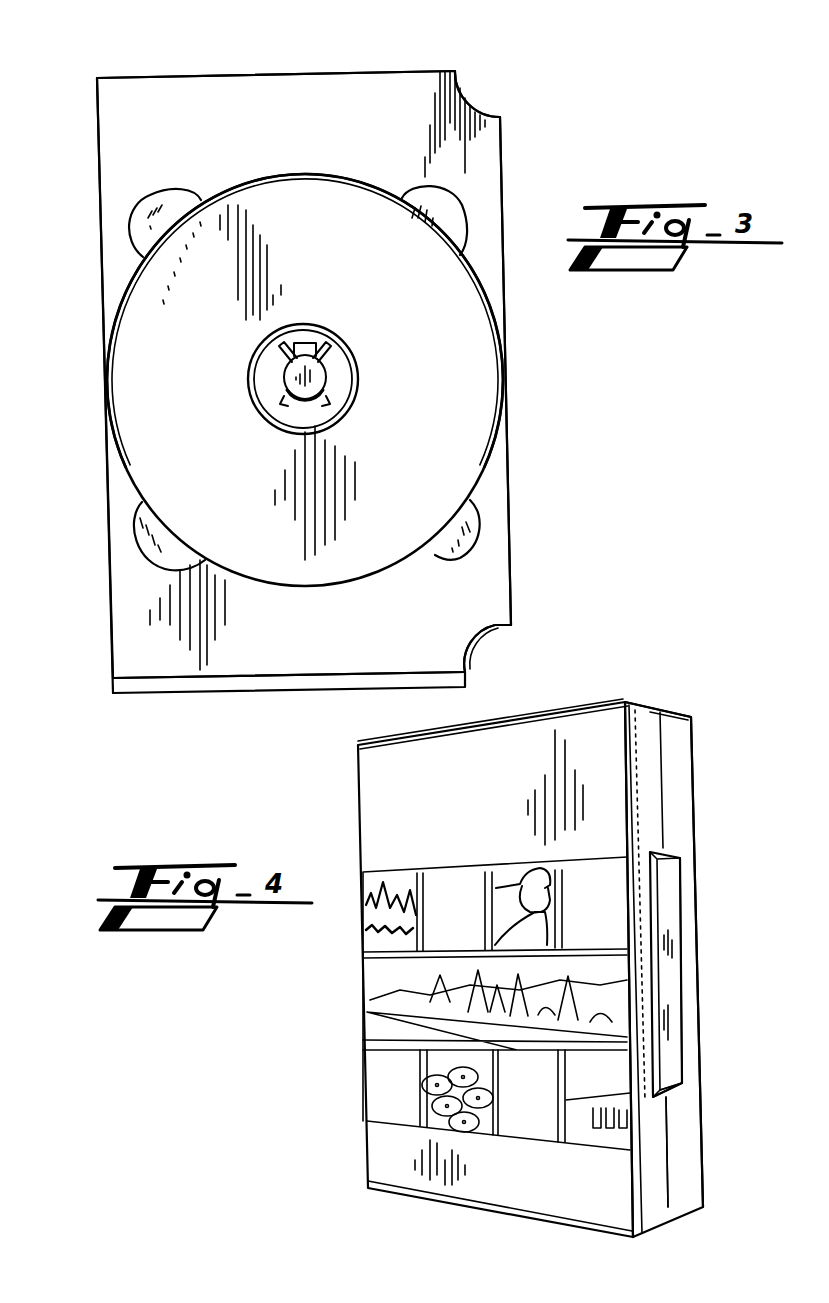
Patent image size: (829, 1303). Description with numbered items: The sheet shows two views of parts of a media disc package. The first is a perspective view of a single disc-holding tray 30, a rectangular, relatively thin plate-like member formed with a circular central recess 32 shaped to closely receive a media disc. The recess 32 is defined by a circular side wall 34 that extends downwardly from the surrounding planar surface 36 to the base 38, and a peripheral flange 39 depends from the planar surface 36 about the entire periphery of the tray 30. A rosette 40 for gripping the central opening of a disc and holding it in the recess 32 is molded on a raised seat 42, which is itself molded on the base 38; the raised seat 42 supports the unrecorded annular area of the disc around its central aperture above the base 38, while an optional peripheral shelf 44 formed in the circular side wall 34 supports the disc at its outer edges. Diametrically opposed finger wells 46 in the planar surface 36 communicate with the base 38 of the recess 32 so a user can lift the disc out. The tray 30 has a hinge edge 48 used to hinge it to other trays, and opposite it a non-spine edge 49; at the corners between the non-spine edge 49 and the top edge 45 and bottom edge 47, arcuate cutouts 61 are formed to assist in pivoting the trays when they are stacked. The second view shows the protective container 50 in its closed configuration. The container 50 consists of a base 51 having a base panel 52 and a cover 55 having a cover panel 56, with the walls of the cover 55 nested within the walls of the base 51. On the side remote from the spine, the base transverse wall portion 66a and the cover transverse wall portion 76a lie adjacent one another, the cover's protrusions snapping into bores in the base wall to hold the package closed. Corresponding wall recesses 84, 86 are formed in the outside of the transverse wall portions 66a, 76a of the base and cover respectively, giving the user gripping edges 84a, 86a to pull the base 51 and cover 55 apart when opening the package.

In FIG. 3, the tray 30 is at (530, 165).
In FIG. 3, the circular central recess 32 is at (485, 361).
In FIG. 3, the circular side wall 34 is at (278, 172).
In FIG. 3, the planar surface 36 is at (330, 647).
In FIG. 3, the base 38 is at (420, 494).
In FIG. 3, the peripheral flange 39 is at (107, 643).
In FIG. 3, the rosette 40 is at (317, 375).
In FIG. 3, the raised seat 42 is at (285, 412).
In FIG. 3, the peripheral shelf 44 is at (313, 183).
In FIG. 3, the top edge 45 is at (241, 73).
In FIG. 3, the finger wells 46 is at (137, 237).
In FIG. 3, the bottom edge 47 is at (217, 697).
In FIG. 3, the hinge edge 48 is at (108, 417).
In FIG. 3, the non-spine edge 49 is at (509, 430).
In FIG. 3, the arcuate cutouts 61 is at (461, 93).
In FIG. 4, the protective container 50 is at (378, 1208).
In FIG. 4, the base 51 is at (683, 740).
In FIG. 4, the base panel 52 is at (695, 897).
In FIG. 4, the cover 55 is at (375, 768).
In FIG. 4, the cover panel 56 is at (467, 818).
In FIG. 4, the transverse side wall portion 66a is at (683, 790).
In FIG. 4, the transverse wall portion 76a is at (640, 705).
In FIG. 4, the wall recess 84 is at (675, 1007).
In FIG. 4, the gripping edge 84a is at (688, 964).
In FIG. 4, the wall recess 86 is at (697, 1087).
In FIG. 4, the gripping edge 86a is at (650, 1057).